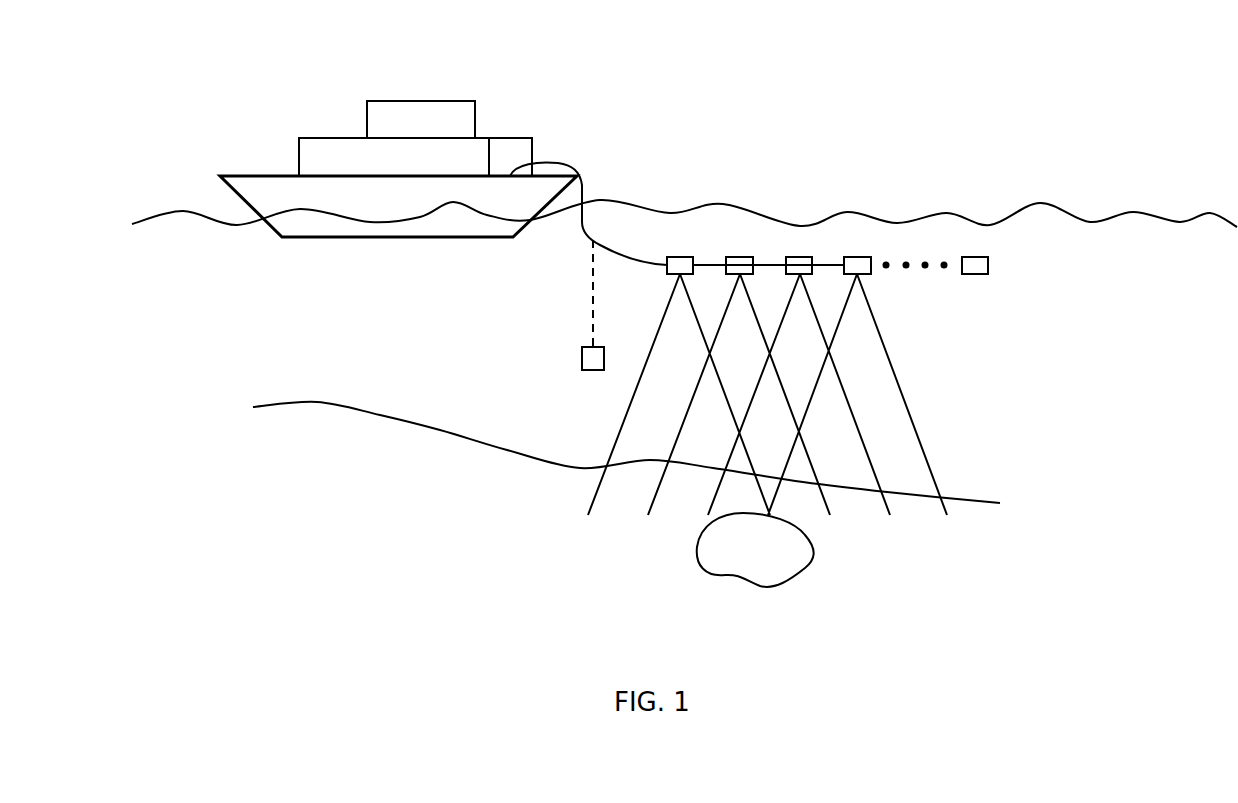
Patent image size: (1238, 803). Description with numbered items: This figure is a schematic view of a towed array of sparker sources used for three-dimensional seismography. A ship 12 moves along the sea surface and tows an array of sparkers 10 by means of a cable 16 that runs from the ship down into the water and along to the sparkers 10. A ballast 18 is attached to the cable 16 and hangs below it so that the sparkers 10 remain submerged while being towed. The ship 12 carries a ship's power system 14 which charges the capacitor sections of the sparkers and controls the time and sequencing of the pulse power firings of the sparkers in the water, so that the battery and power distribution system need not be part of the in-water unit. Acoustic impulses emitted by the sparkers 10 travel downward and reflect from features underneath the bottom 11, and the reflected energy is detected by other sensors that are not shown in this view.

The array of sparkers 10 is at (737, 258).
The bottom 11 is at (923, 590).
The ship 12 is at (323, 138).
The ship's power system 14 is at (512, 138).
The cable 16 is at (567, 165).
The ballast 18 is at (582, 355).